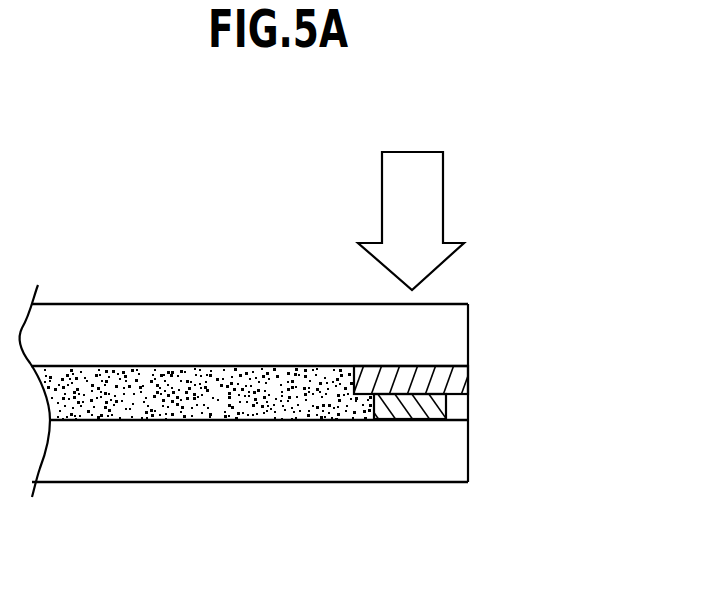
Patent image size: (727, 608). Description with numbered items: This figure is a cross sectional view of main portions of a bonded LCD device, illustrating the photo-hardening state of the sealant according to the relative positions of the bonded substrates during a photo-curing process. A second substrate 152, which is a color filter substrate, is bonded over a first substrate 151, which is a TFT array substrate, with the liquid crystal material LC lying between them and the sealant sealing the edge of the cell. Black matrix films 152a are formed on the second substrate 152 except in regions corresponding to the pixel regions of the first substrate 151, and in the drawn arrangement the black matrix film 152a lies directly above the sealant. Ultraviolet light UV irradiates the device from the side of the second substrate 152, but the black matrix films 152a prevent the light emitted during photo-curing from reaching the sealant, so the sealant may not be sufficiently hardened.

The second substrate 152 is at (200, 313).
The black matrix films 152a is at (458, 380).
The first substrate 151 is at (313, 467).
The liquid crystal material LC is at (193, 421).
The element sealant is at (445, 408).
The ultraviolet light UV is at (411, 201).